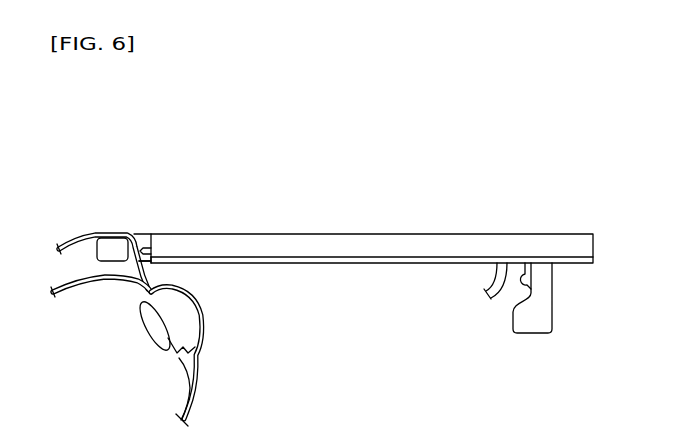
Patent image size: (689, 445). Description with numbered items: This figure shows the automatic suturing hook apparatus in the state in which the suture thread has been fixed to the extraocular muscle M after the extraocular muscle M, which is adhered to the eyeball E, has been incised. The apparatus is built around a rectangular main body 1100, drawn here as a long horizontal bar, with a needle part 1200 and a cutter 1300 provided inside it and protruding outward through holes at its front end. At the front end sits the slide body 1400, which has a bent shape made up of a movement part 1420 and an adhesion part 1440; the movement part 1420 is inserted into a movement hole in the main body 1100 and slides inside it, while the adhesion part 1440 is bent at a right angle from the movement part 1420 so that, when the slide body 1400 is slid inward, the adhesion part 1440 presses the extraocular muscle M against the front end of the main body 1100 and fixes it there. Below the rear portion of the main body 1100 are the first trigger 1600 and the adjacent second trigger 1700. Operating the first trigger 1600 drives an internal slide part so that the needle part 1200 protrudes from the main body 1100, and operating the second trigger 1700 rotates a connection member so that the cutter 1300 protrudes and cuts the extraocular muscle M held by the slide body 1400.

The extraocular muscle M is at (80, 233).
The eyeball E is at (206, 344).
The main body 1100 is at (359, 239).
The needle part 1200 is at (152, 247).
The cutter 1300 is at (152, 257).
The slide body 1400 is at (206, 126).
The movement part 1420 is at (147, 243).
The adhesion part 1440 is at (113, 247).
The first trigger 1600 is at (485, 289).
The second trigger 1700 is at (525, 286).